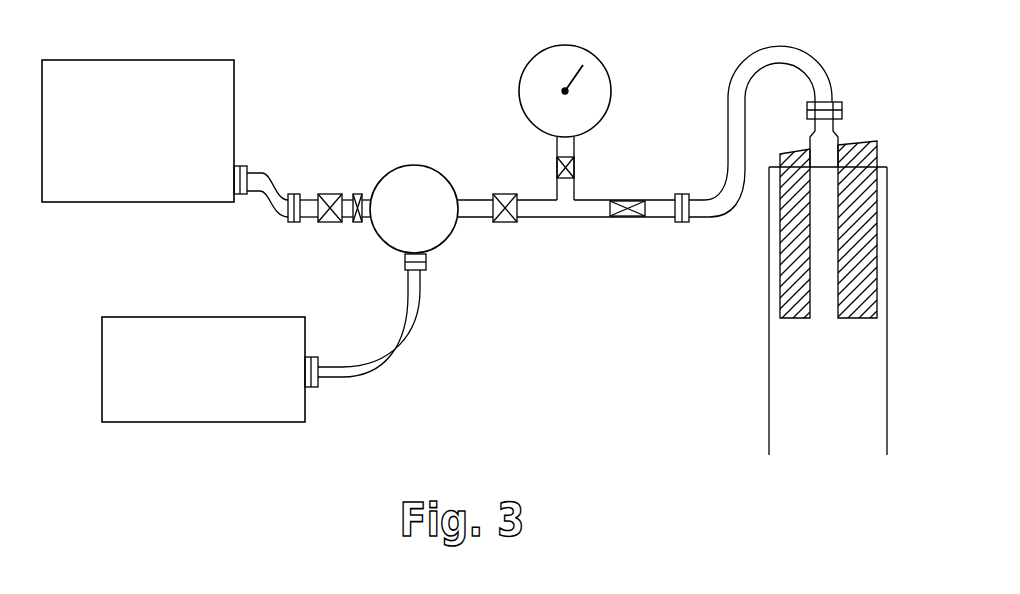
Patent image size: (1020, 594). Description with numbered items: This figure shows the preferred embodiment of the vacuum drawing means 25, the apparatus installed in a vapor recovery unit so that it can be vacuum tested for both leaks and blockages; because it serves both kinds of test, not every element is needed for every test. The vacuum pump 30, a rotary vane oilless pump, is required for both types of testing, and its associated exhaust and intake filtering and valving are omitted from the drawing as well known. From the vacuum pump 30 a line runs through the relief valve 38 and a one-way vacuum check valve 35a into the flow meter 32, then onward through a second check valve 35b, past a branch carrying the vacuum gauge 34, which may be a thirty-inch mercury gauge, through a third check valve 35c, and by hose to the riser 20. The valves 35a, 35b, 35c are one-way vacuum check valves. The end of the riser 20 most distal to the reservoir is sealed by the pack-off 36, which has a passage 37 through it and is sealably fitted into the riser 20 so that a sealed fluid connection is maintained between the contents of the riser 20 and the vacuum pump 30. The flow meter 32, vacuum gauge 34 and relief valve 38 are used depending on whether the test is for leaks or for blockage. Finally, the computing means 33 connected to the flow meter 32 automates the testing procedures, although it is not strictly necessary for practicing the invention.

The riser 20 is at (797, 414).
The vacuum drawing means 25 is at (300, 64).
The vacuum pump 30 is at (118, 160).
The flow meter 32 is at (402, 221).
The computing means 33 is at (182, 401).
The vacuum gauge 34 is at (537, 71).
The one-way vacuum check valve 35a is at (358, 228).
The one-way vacuum check valve 35b is at (505, 223).
The one-way vacuum check valve 35c is at (623, 218).
The pack-off 36 is at (862, 138).
The passage 37 is at (826, 307).
The relief valve 38 is at (334, 194).